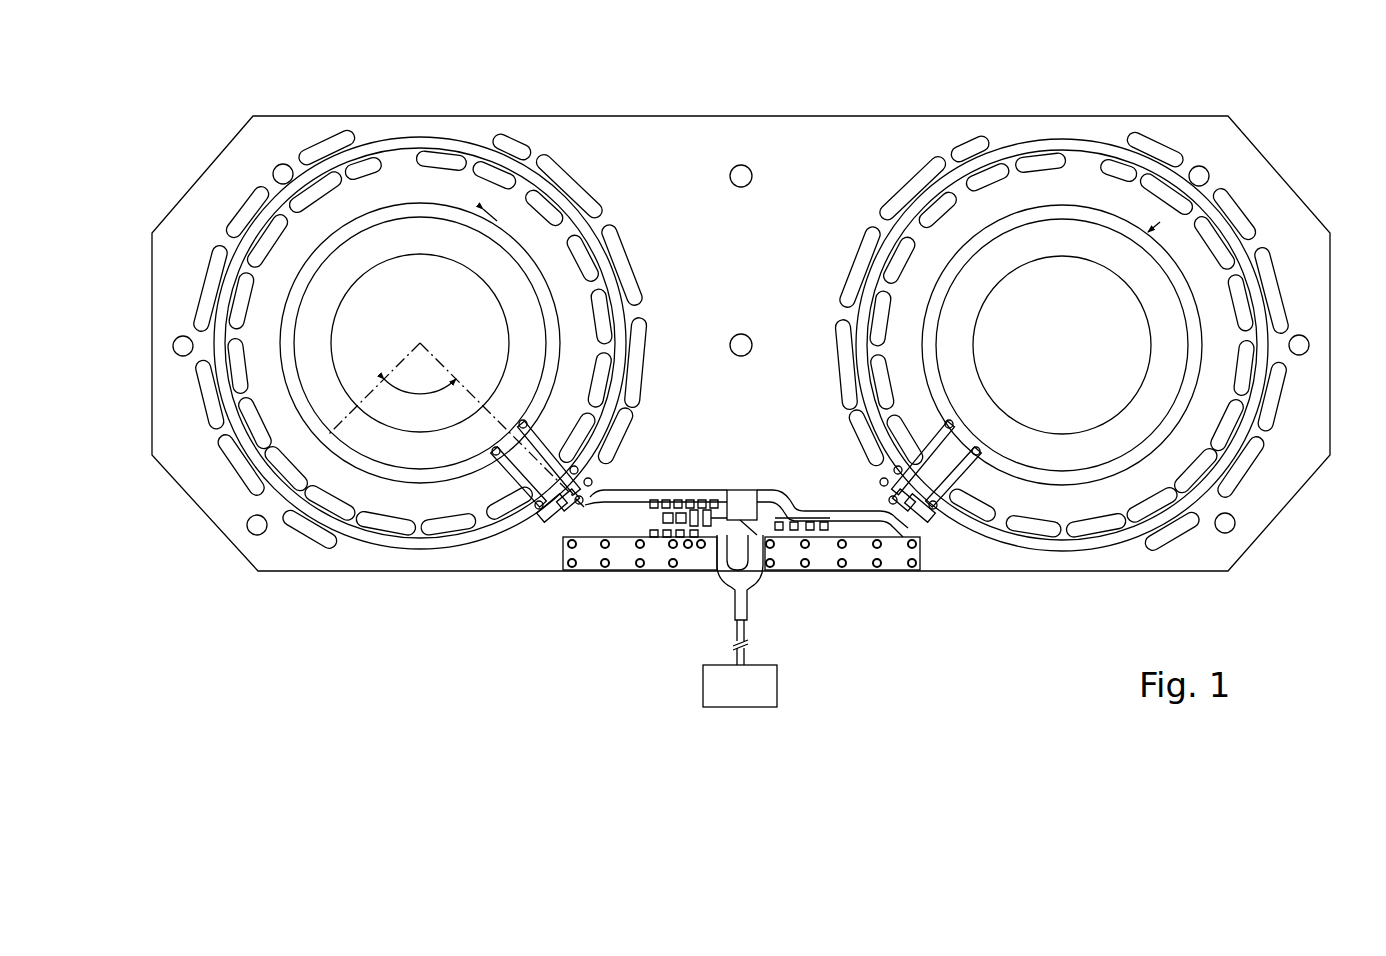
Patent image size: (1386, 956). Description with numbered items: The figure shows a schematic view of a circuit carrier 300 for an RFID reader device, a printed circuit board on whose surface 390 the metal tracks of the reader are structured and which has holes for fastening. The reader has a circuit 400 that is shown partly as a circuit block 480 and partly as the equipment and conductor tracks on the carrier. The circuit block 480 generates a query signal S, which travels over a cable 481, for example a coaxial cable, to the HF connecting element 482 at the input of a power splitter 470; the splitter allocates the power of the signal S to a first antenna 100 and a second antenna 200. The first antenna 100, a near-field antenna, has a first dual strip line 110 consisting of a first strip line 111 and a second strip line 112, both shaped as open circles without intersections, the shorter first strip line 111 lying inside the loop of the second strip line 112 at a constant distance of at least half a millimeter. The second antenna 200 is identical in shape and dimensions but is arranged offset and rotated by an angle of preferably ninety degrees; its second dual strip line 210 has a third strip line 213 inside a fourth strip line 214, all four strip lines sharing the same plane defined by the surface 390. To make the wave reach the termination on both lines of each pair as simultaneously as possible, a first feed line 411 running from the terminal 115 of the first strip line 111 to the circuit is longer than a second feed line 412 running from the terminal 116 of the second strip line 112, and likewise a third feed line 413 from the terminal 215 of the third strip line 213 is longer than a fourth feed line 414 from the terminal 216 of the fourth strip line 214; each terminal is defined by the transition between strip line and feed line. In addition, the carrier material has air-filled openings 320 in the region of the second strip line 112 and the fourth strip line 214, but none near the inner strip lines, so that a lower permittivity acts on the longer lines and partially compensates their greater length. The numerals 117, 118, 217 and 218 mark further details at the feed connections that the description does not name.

The first antenna 100 is at (1165, 105).
The first dual strip line 110 is at (858, 158).
The first strip line 111 is at (1045, 215).
The second strip line 112 is at (1095, 148).
The terminal of the first strip line 115 is at (978, 452).
The terminal of the second strip line 116 is at (945, 512).
The second antenna feed strip 117 is at (951, 424).
The second antenna connector 118 is at (896, 470).
The second antenna 200 is at (437, 107).
The second dual strip line 210 is at (604, 161).
The third strip line 213 is at (392, 212).
The fourth strip line 214 is at (453, 147).
The terminal of the third strip line 215 is at (521, 424).
The terminal of the fourth strip line 216 is at (580, 470).
The first antenna feed strip 217 is at (496, 451).
The first antenna feed pad 218 is at (532, 510).
The circuit carrier 300 is at (598, 138).
The openings 320 is at (200, 398).
The surface of the circuit carrier 390 is at (733, 217).
The circuit 400 is at (705, 595).
The first feed line 411 is at (958, 483).
The second feed line 412 is at (930, 525).
The third feed line 413 is at (570, 462).
The fourth feed line 414 is at (592, 483).
The power splitter 470 is at (742, 488).
The circuit block 480 is at (762, 699).
The cable 481 is at (746, 632).
The HF connecting element 482 is at (750, 605).
The signal S is at (758, 653).